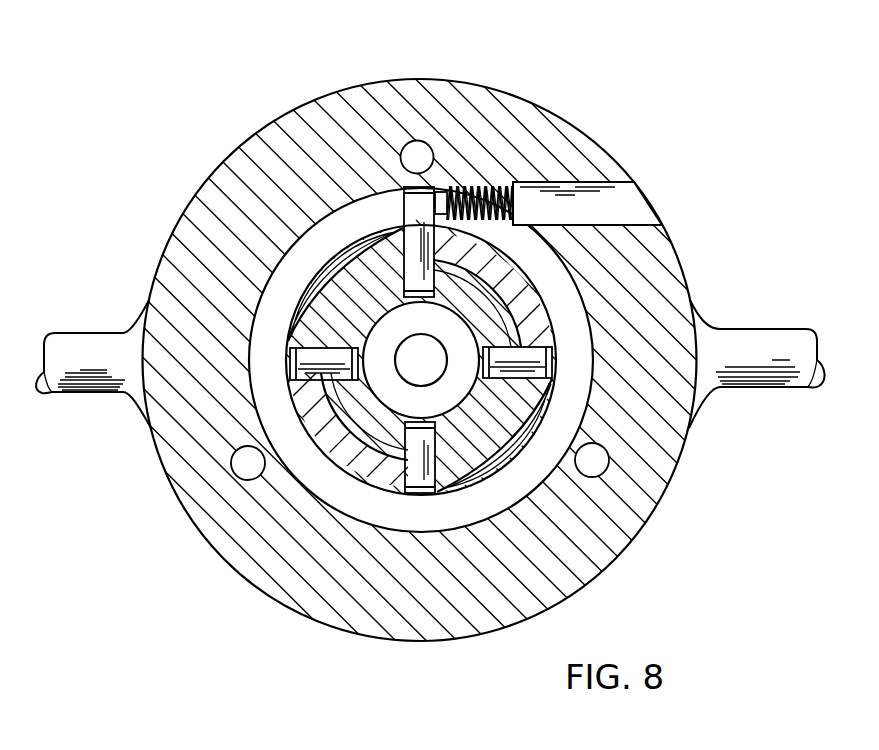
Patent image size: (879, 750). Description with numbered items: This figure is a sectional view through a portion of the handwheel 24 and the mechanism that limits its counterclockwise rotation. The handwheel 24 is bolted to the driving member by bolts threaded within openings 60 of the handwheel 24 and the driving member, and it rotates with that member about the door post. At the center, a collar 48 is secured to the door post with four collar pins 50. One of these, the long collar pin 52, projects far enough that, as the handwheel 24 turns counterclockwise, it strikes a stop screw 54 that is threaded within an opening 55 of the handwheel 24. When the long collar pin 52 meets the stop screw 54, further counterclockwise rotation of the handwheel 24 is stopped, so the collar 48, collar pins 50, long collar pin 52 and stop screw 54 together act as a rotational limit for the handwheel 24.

The handwheel 24 is at (294, 557).
The collar 48 is at (518, 430).
The collar pins 50 is at (312, 368).
The long collar pin 52 is at (403, 201).
The stop screw 54 is at (490, 185).
The opening 55 is at (513, 182).
The openings 60 is at (443, 193).